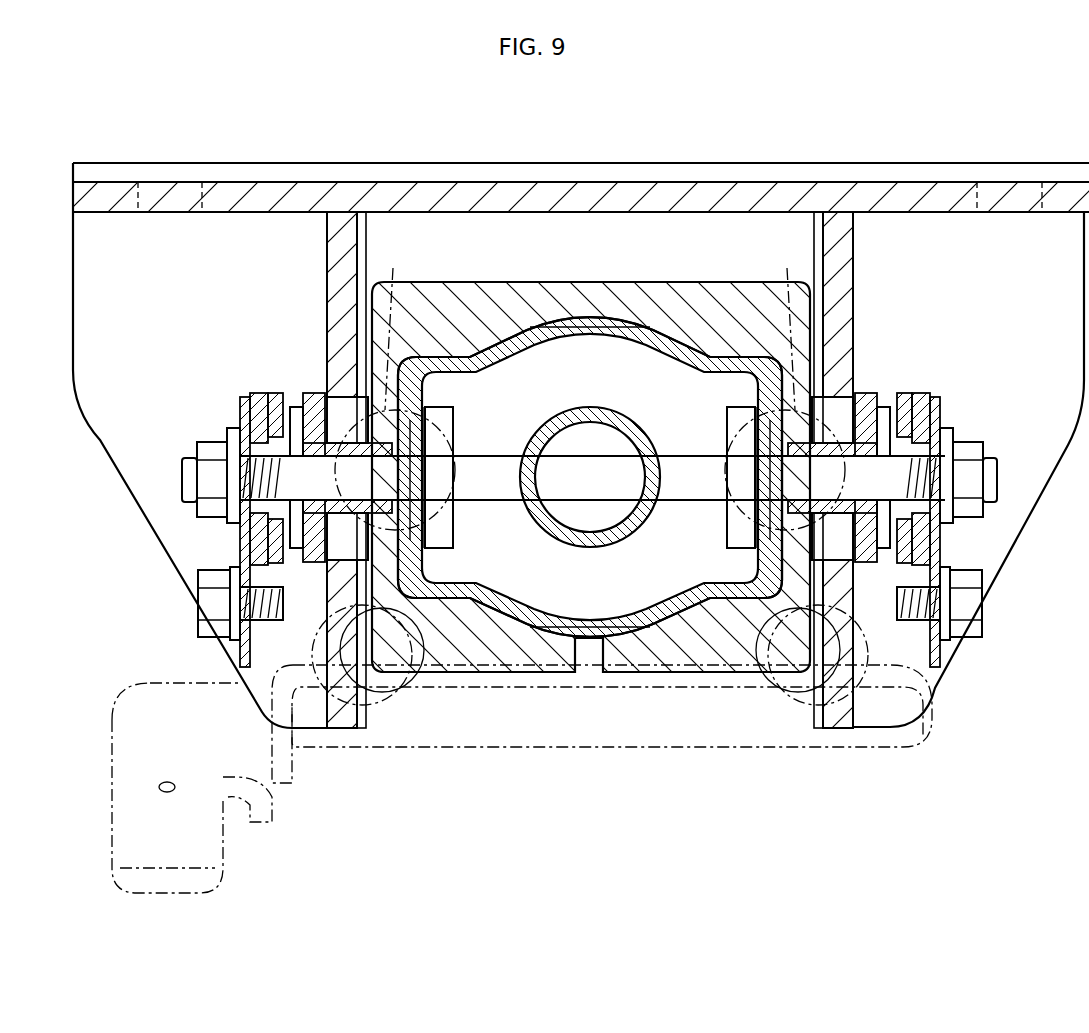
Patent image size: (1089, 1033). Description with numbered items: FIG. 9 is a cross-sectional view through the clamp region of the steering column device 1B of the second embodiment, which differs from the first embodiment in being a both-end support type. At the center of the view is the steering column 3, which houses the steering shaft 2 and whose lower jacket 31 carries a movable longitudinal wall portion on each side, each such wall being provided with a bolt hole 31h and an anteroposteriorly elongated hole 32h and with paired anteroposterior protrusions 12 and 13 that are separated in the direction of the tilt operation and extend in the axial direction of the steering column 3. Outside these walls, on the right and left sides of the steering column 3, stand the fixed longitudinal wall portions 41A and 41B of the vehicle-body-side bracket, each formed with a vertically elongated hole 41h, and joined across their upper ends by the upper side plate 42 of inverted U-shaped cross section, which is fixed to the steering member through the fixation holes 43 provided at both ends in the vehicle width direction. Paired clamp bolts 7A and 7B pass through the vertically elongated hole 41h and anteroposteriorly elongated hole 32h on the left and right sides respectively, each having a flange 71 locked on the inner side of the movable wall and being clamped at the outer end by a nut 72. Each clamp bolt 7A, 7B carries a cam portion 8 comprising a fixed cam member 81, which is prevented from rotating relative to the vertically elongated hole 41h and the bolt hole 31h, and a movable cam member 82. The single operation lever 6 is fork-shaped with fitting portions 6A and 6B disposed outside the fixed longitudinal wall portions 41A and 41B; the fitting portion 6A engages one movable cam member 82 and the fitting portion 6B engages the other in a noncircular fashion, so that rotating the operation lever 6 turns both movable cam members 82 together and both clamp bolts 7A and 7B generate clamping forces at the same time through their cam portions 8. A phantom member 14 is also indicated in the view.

The steering column device 1B is at (908, 114).
The steering shaft 2 is at (606, 420).
The steering column 3 is at (565, 282).
The operation lever 6 is at (280, 808).
The fitting portion 6A is at (242, 658).
The fitting portion 6B is at (633, 708).
The clamp bolt 7A is at (184, 478).
The clamp bolt 7B is at (996, 478).
The cam portion 8 is at (178, 355).
The anteroposterior protrusion 12 is at (347, 396).
The anteroposterior protrusion 13 is at (368, 680).
The phantom member 14 is at (390, 292).
The lower jacket 31 is at (462, 292).
The bolt hole 31h is at (432, 470).
The anteroposteriorly elongated hole 32h is at (424, 500).
The fixed longitudinal wall portion 41A is at (330, 233).
The fixed longitudinal wall portion 41B is at (848, 234).
The vertically elongated hole 41h is at (287, 550).
The upper side plate 42 is at (712, 181).
The fixation hole 43 is at (200, 200).
The flange 71 is at (455, 420).
The nut 72 is at (230, 440).
The fixed cam member 81 is at (296, 400).
The movable cam member 82 is at (250, 418).